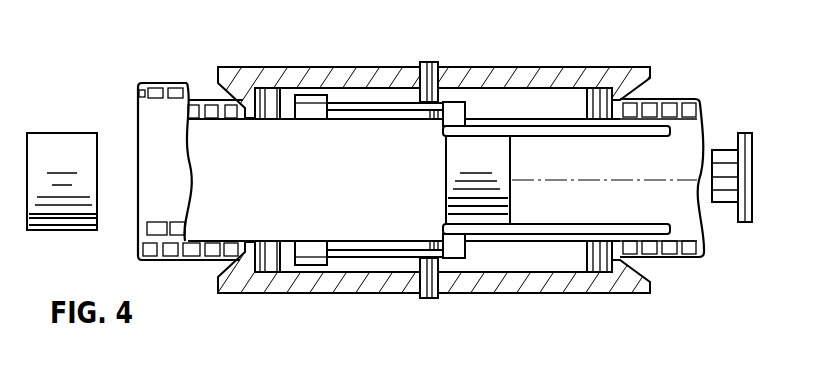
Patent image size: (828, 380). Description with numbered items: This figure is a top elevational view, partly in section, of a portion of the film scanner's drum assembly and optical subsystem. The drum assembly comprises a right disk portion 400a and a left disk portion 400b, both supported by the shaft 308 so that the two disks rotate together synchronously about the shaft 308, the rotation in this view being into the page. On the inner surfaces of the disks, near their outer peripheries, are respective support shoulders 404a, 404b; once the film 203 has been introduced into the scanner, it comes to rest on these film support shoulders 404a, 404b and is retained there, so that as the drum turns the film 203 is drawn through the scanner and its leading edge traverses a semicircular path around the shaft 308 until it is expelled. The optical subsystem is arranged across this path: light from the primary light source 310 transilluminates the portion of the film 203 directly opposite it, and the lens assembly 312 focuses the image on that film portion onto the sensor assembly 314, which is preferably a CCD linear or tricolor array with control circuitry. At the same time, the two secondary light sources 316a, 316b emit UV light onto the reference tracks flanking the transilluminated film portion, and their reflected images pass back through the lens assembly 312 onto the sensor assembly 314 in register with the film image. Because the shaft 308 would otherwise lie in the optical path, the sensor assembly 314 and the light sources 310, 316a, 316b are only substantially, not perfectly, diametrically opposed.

The film 203 is at (152, 79).
The shaft 308 is at (427, 78).
The primary light source 310 is at (62, 181).
The lens assembly 312 is at (556, 180).
The sensor assembly 314 is at (746, 133).
The secondary light source 316a is at (310, 257).
The secondary light source 316b is at (309, 100).
The right disk portion 400a is at (367, 293).
The left disk portion 400b is at (550, 65).
The support shoulder 404a is at (222, 244).
The support shoulder 404b is at (247, 107).